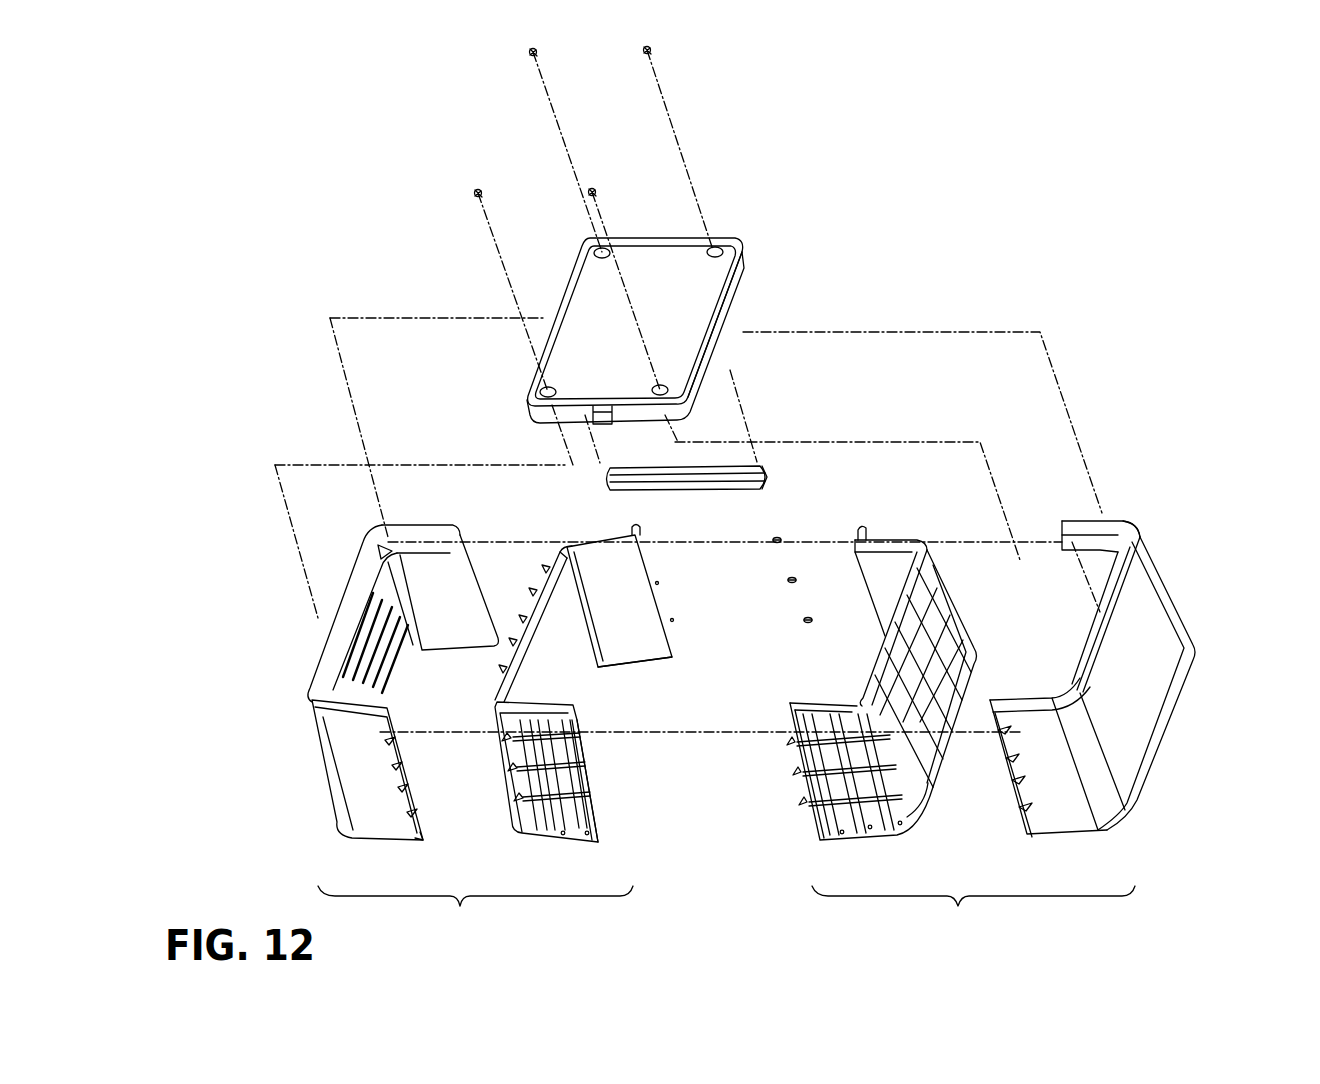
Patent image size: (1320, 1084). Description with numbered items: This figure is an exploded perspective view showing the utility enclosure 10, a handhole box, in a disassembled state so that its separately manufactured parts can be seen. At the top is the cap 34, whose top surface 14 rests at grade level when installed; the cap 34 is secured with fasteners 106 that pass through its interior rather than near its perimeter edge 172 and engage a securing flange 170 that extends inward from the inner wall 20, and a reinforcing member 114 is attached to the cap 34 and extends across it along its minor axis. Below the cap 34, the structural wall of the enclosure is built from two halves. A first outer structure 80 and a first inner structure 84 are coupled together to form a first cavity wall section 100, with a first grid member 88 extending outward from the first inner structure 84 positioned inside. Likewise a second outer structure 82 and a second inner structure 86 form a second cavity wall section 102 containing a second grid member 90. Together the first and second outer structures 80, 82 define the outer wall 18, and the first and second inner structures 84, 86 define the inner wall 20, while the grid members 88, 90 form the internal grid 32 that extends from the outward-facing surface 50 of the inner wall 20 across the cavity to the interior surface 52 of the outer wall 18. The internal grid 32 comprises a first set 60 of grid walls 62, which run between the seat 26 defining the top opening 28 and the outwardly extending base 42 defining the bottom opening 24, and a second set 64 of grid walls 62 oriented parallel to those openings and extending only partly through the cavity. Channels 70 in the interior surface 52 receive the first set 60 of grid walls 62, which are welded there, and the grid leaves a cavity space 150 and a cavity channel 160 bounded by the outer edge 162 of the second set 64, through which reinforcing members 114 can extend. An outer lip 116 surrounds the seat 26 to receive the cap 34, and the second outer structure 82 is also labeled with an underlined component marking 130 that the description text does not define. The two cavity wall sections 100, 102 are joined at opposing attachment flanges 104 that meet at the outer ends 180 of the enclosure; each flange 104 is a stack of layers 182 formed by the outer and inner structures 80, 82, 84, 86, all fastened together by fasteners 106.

The utility enclosure 10 is at (1047, 210).
The top surface 14 is at (618, 327).
The outer wall 18 is at (338, 783).
The inner wall 20 is at (633, 608).
The bottom opening 24 is at (593, 680).
The seat 26 is at (357, 634).
The top opening 28 is at (553, 580).
The internal grid 32 is at (942, 576).
The cap 34 is at (516, 385).
The outwardly extending base 42 is at (337, 825).
The outward-facing surface 50 is at (858, 815).
The interior surface 52 is at (377, 620).
The first set of grid walls 60 is at (930, 632).
The grid walls 62 is at (842, 743).
The second set of grid walls 64 is at (917, 727).
The channels 70 is at (385, 657).
The first outer structure 80 is at (323, 732).
The second outer structure 82 is at (1130, 747).
The first inner structure 84 is at (572, 684).
The second inner structure 86 is at (882, 592).
The first grid member 88 is at (515, 746).
The second grid member 90 is at (938, 617).
The first cavity wall section 100 is at (475, 916).
The second cavity wall section 102 is at (973, 916).
The attachment flanges 104 is at (1024, 810).
The fasteners 106 is at (652, 53).
The reinforcing member 114 is at (690, 486).
The outer lip 116 is at (1140, 528).
The cover 130 is at (1107, 668).
The cavity space 150 is at (556, 786).
The cavity channel 160 is at (925, 785).
The outer edge 162 is at (840, 778).
The securing flange 170 is at (397, 548).
The perimeter edge 172 is at (738, 275).
The outer ends 180 is at (424, 842).
The layers 182 is at (590, 808).